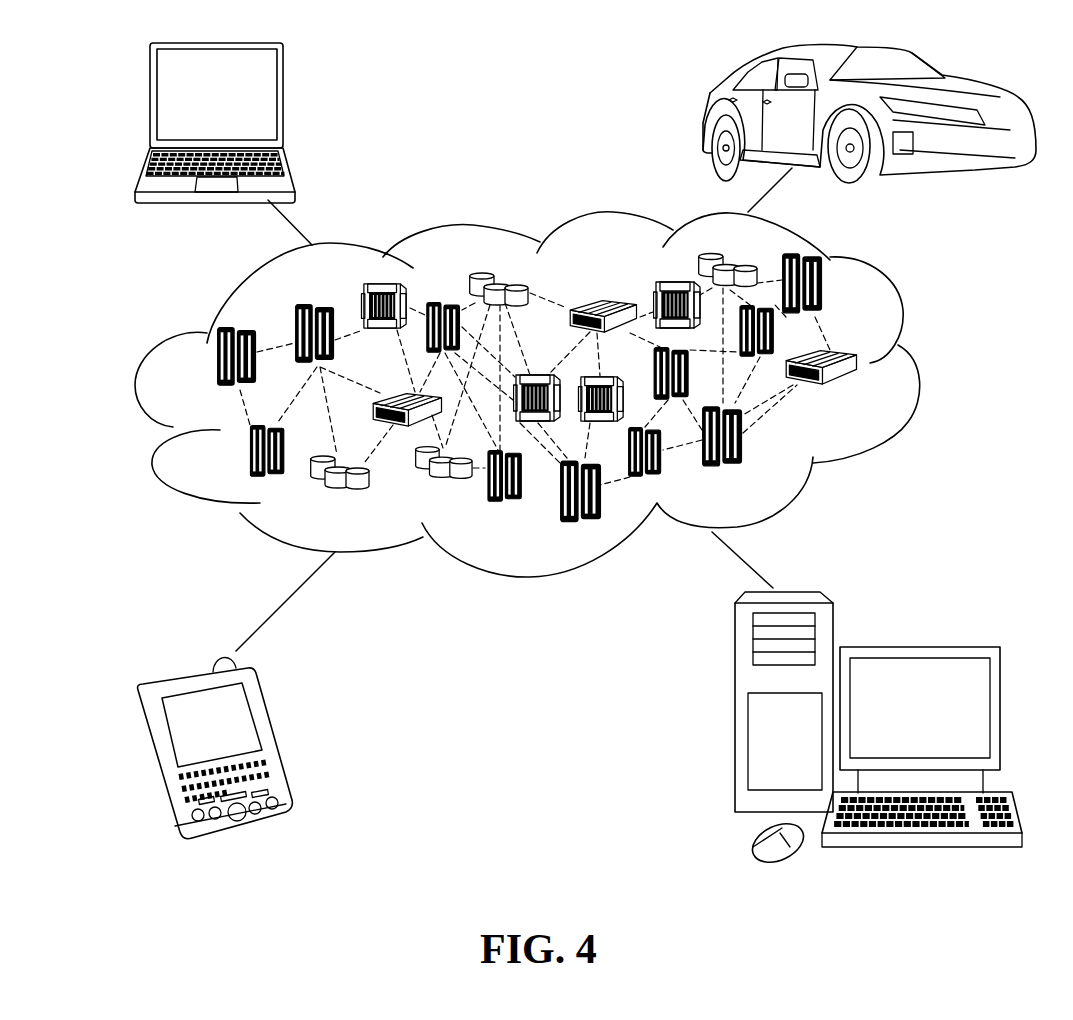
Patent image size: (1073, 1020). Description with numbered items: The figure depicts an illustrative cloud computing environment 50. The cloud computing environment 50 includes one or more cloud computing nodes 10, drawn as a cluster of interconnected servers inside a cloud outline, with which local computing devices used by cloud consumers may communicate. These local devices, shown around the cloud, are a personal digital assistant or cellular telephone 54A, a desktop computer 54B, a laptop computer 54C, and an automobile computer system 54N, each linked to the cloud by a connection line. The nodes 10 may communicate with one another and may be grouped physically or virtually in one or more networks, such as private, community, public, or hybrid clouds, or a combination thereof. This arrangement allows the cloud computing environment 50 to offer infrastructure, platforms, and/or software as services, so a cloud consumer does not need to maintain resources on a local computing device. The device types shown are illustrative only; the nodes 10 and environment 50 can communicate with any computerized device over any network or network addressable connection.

The cloud computing node 10 is at (862, 397).
The cloud computing environment 50 is at (918, 366).
The personal digital assistant or cellular telephone 54A is at (273, 738).
The desktop computer 54B is at (917, 646).
The laptop computer 54C is at (283, 103).
The automobile computer system 54N is at (705, 122).